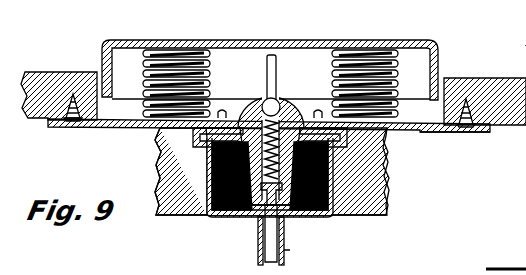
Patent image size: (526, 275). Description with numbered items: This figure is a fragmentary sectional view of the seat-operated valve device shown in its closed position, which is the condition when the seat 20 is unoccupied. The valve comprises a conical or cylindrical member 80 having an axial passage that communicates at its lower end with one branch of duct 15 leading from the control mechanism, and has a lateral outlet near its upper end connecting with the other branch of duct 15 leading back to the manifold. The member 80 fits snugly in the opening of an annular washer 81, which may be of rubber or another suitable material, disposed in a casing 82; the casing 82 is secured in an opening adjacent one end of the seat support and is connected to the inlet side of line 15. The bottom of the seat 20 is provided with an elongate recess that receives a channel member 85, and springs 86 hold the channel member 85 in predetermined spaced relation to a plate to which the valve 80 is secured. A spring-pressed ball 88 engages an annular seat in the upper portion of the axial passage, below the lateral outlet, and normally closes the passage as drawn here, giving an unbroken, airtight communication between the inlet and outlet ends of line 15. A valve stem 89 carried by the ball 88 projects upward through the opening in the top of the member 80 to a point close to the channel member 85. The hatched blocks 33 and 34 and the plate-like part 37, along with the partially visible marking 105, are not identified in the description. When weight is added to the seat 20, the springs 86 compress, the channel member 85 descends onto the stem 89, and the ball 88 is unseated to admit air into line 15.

The duct 15 is at (262, 256).
The seat 20 is at (521, 127).
The valve body 33 is at (376, 196).
The block 34 is at (446, 88).
The plate 37 is at (110, 128).
The valve member 80 is at (290, 100).
The annular washer 81 is at (200, 205).
The casing 82 is at (321, 218).
The channel member 85 is at (319, 43).
The springs 86 is at (196, 56).
The spring-pressed ball 88 is at (263, 103).
The valve stem 89 is at (267, 66).
The part 105 is at (512, 25).